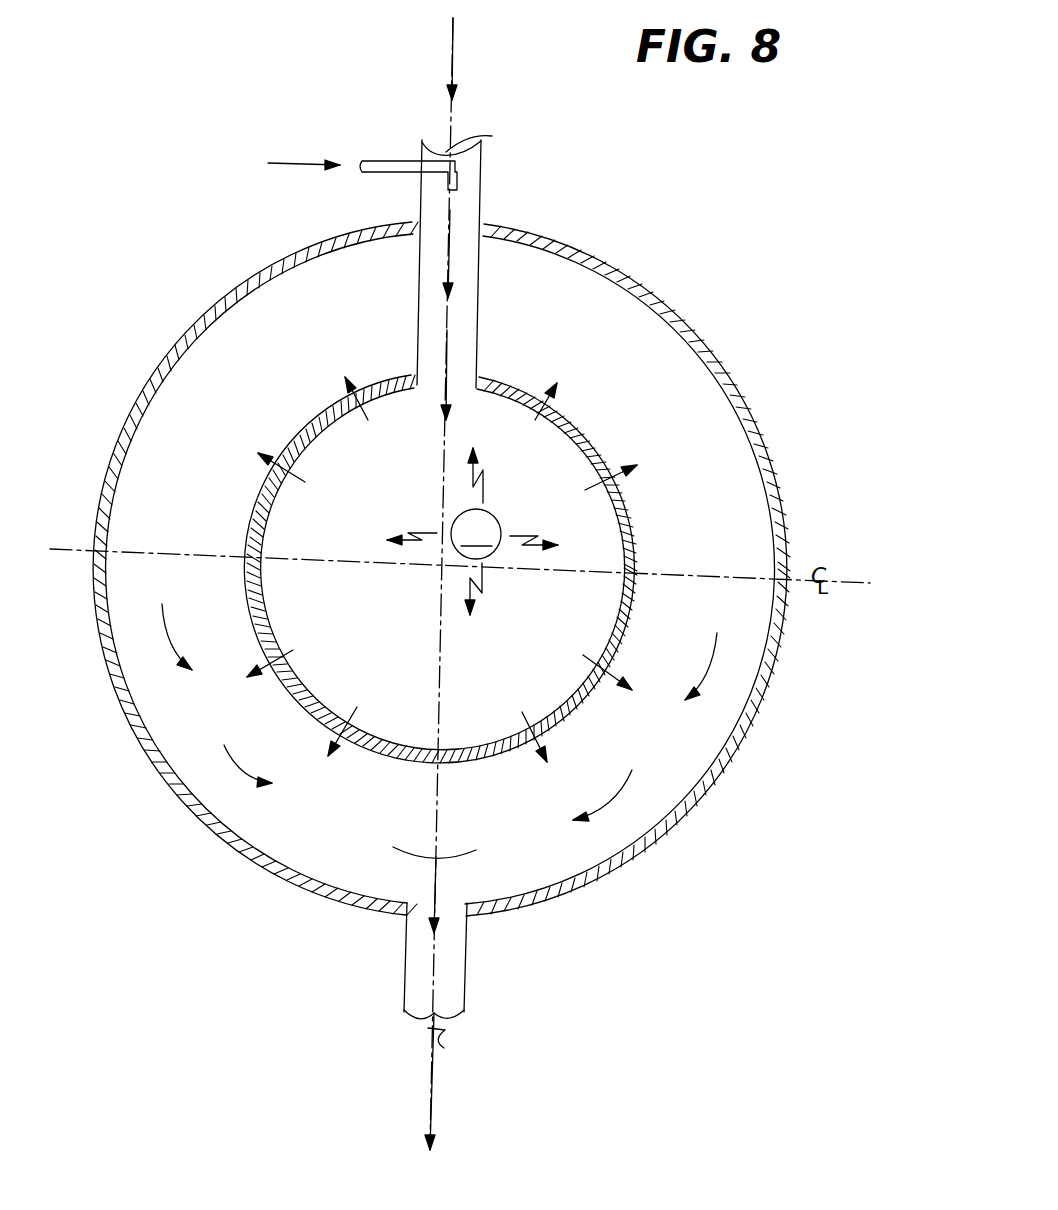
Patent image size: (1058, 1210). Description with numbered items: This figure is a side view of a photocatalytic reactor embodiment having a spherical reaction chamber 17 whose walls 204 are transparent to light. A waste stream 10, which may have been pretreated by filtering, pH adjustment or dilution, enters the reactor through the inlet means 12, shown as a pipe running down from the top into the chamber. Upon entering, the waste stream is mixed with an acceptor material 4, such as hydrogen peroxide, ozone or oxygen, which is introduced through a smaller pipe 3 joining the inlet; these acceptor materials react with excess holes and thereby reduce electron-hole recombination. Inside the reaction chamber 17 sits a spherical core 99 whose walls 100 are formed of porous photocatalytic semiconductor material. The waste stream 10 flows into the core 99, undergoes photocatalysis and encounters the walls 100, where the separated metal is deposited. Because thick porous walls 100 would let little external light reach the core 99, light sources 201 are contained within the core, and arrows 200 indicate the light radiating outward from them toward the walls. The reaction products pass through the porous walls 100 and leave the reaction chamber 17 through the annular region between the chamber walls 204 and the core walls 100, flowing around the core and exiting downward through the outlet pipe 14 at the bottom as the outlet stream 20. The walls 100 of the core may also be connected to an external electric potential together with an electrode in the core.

The waste stream 10 is at (455, 48).
The pipe 3 is at (382, 160).
The acceptor material 4 is at (290, 164).
The inlet means 12 is at (481, 158).
The walls of the reaction chamber 204 is at (767, 437).
The walls of the core 100 is at (637, 512).
The radial flow arrows 200 is at (413, 532).
The light sources 201 is at (476, 534).
The core 99 is at (530, 646).
The reaction chamber 17 is at (612, 872).
The outlet pipe 14 is at (467, 955).
The outlet flow 20 is at (433, 1090).